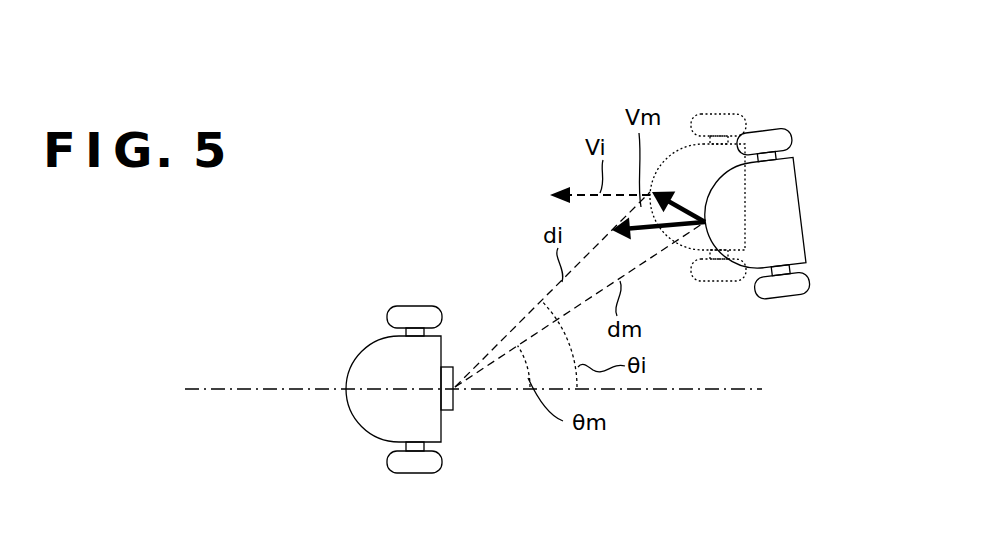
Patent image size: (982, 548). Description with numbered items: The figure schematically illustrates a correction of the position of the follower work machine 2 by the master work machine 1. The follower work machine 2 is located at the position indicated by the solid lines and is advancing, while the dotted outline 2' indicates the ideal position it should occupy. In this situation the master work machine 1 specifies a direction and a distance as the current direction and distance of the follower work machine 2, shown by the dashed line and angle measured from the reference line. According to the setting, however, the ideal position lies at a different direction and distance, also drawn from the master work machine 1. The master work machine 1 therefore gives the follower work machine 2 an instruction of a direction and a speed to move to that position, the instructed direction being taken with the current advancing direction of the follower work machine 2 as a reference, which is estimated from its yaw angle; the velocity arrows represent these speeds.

The master work machine 1 is at (406, 305).
The follower work machine 2 is at (770, 212).
The predicted position of other vehicle 2' is at (707, 144).